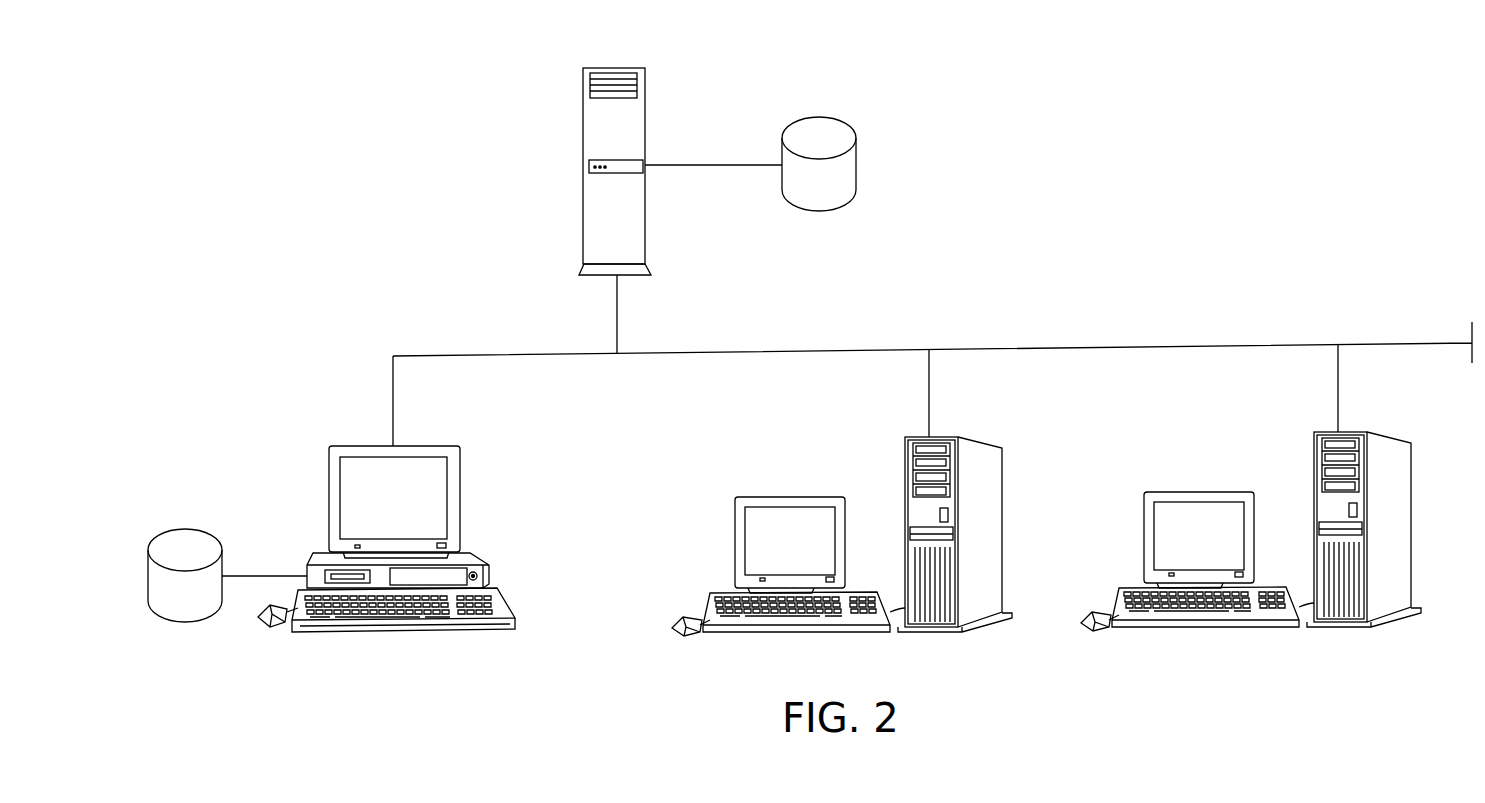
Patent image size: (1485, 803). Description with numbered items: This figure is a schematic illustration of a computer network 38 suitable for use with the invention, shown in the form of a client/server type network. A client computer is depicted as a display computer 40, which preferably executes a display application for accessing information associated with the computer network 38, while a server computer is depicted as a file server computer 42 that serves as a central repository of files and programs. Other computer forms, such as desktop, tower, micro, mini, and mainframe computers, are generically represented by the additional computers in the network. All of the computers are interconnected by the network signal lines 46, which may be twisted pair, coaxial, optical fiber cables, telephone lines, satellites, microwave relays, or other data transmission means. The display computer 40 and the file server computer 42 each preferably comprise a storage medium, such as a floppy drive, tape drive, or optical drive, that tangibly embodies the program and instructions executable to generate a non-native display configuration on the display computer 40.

The computer network 38 is at (430, 178).
The display computer 40 is at (329, 477).
The file server computer 42 is at (645, 120).
The network signal lines 46 is at (563, 354).